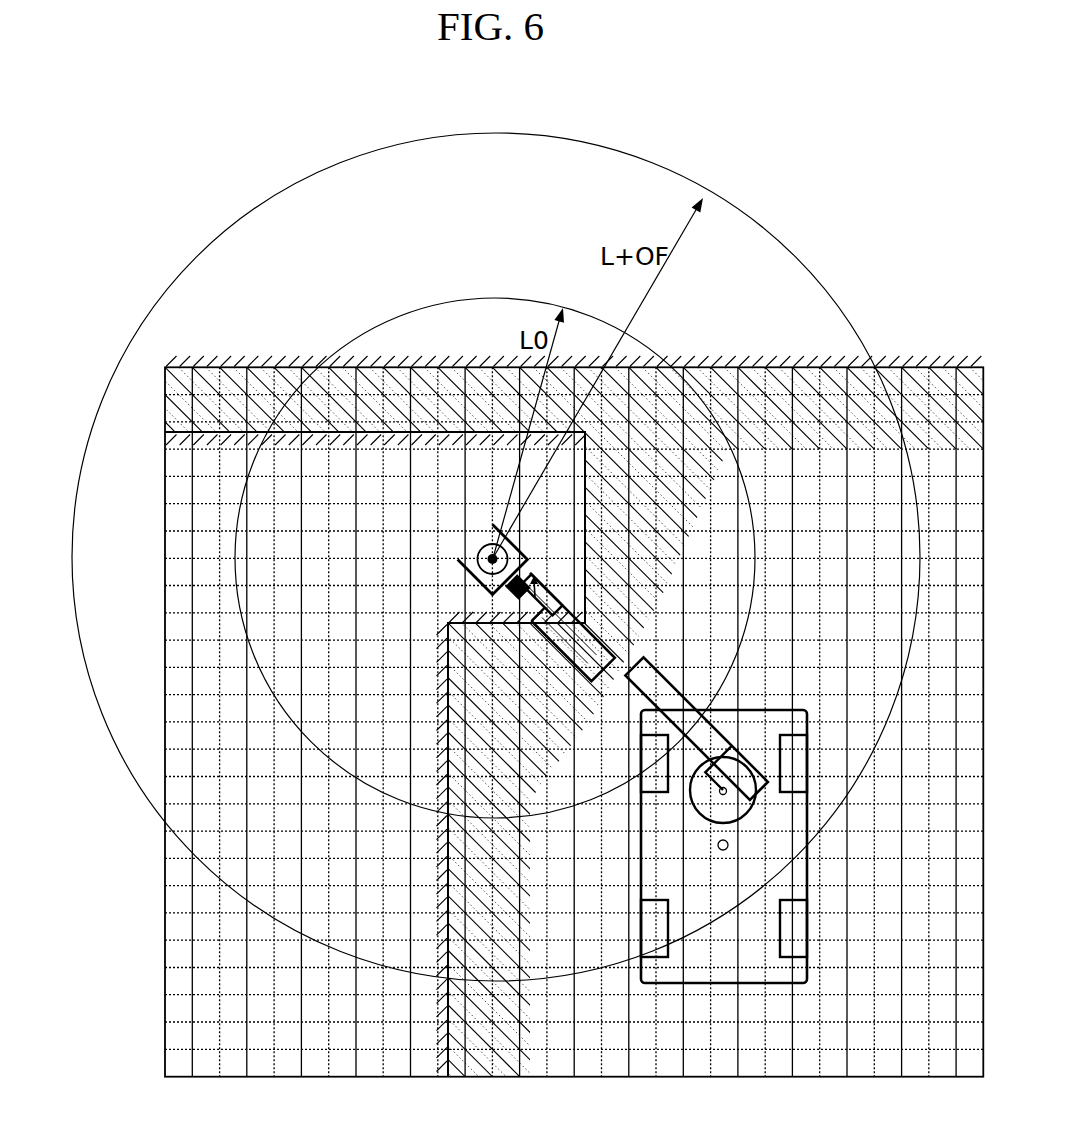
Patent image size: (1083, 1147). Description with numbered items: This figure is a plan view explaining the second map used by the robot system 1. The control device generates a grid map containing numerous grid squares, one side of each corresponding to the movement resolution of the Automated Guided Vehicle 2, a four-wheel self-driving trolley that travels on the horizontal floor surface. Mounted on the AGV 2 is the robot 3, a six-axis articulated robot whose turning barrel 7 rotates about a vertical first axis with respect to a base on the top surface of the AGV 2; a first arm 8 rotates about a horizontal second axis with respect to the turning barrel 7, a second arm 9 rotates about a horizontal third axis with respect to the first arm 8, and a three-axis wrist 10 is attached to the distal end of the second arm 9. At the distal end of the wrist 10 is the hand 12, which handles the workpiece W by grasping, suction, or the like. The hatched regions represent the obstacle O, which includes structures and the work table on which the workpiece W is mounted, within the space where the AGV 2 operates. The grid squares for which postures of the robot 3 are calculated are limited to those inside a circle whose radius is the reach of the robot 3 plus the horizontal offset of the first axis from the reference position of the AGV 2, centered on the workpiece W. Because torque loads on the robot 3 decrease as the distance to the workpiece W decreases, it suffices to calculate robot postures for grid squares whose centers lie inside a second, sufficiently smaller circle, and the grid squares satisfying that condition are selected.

The robot system 1 is at (565, 542).
The Automated Guided Vehicle 2 is at (743, 799).
The robot 3 is at (636, 642).
The turning barrel 7 is at (706, 814).
The first arm 8 is at (724, 737).
The second arm 9 is at (618, 708).
The wrist 10 is at (552, 575).
The hand 12 is at (468, 577).
The workpiece W is at (478, 553).
The obstacle O is at (598, 463).